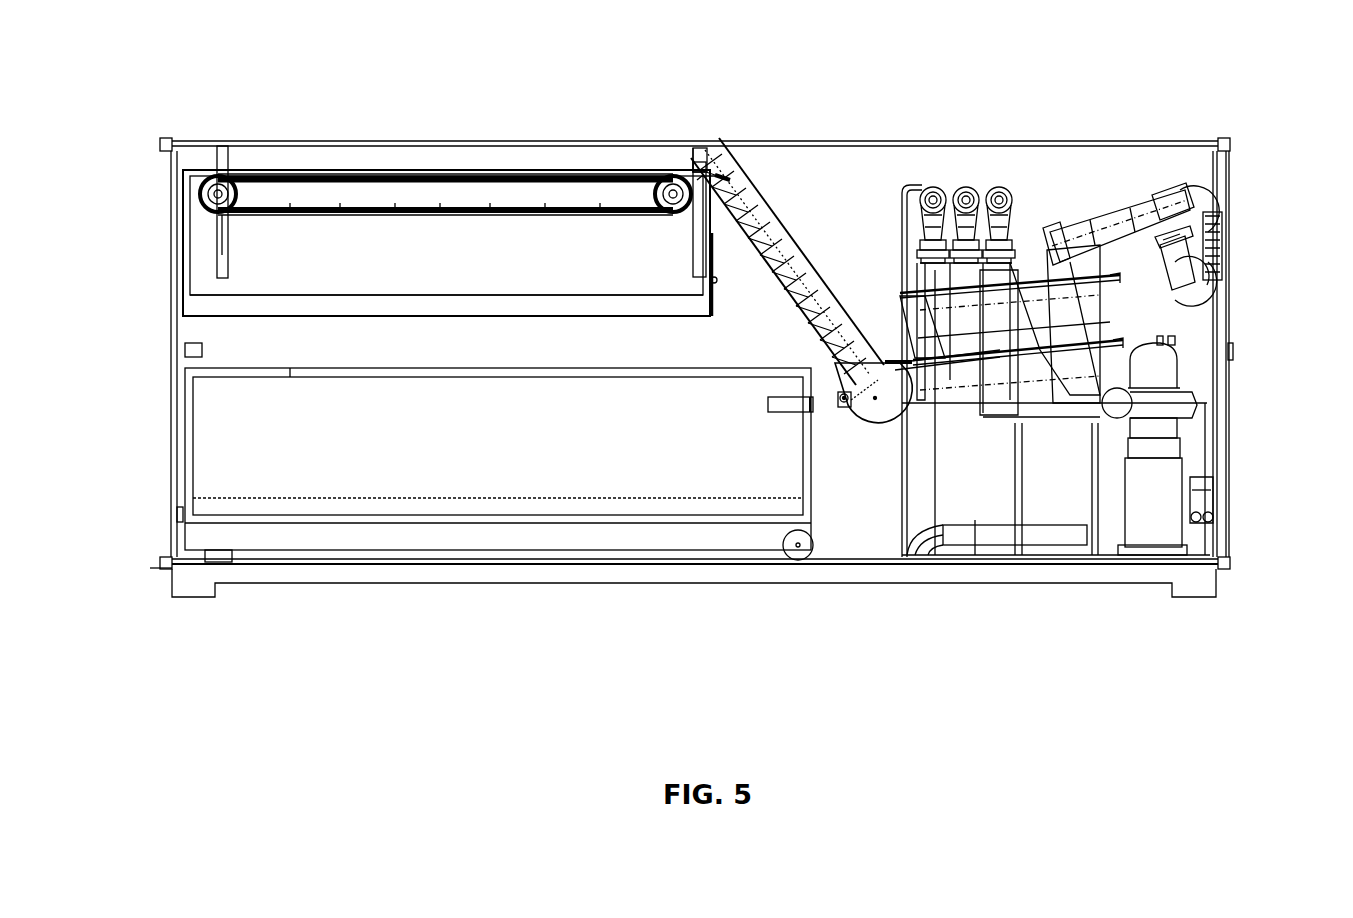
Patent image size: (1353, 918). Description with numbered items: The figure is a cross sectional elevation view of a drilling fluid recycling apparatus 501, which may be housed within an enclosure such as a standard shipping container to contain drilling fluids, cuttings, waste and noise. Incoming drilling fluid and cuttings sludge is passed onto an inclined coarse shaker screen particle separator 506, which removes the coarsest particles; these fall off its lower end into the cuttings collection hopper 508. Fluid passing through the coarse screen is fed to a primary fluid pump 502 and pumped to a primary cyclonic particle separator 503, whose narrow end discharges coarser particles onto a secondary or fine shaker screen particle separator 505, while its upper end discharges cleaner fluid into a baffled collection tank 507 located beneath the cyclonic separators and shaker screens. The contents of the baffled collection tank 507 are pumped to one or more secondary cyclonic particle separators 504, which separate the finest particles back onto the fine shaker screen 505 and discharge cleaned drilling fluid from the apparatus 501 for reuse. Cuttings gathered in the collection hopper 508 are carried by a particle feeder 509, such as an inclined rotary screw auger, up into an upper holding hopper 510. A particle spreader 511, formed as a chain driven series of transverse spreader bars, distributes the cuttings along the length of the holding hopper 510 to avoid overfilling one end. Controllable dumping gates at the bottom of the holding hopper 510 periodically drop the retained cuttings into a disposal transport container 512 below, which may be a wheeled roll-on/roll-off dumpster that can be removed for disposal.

The drilling fluid recycling apparatus 501 is at (691, 306).
The primary fluid pump 502 is at (1218, 426).
The primary cyclonic particle separator 503 is at (1151, 199).
The secondary cyclonic particle separator 504 is at (1022, 257).
The secondary shaker screen particle separator 505 is at (1053, 322).
The coarse shaker screen particle separator 506 is at (945, 231).
The baffled collection tank 507 is at (1056, 544).
The cuttings collection hopper 508 is at (830, 502).
The particle feeder 509 is at (769, 206).
The upper holding hopper 510 is at (383, 231).
The particle spreader 511 is at (445, 141).
The disposal transport container 512 is at (495, 492).